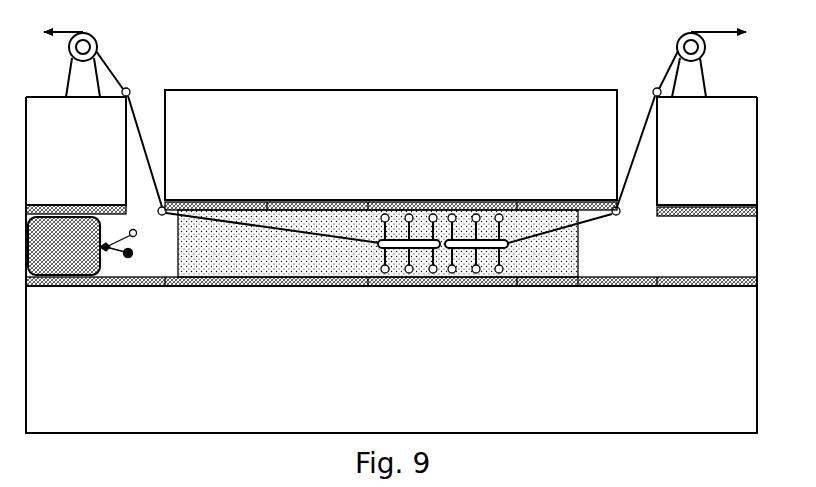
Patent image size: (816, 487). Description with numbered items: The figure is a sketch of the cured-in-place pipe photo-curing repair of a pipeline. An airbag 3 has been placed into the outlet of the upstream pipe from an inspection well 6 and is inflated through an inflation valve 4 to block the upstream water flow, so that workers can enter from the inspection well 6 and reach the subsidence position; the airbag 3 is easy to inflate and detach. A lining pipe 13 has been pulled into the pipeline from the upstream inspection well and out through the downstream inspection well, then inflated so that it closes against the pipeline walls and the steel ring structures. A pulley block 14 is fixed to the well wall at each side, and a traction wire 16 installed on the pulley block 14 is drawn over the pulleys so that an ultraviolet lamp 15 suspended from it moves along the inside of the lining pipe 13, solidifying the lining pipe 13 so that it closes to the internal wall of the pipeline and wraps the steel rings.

The airbag 3 is at (77, 255).
The inflation valve 4 is at (108, 250).
The inspection well 6 is at (155, 115).
The lining pipe 13 is at (287, 223).
The pulley block 14 is at (680, 52).
The ultraviolet lamp 15 is at (386, 270).
The traction wire 16 is at (640, 145).